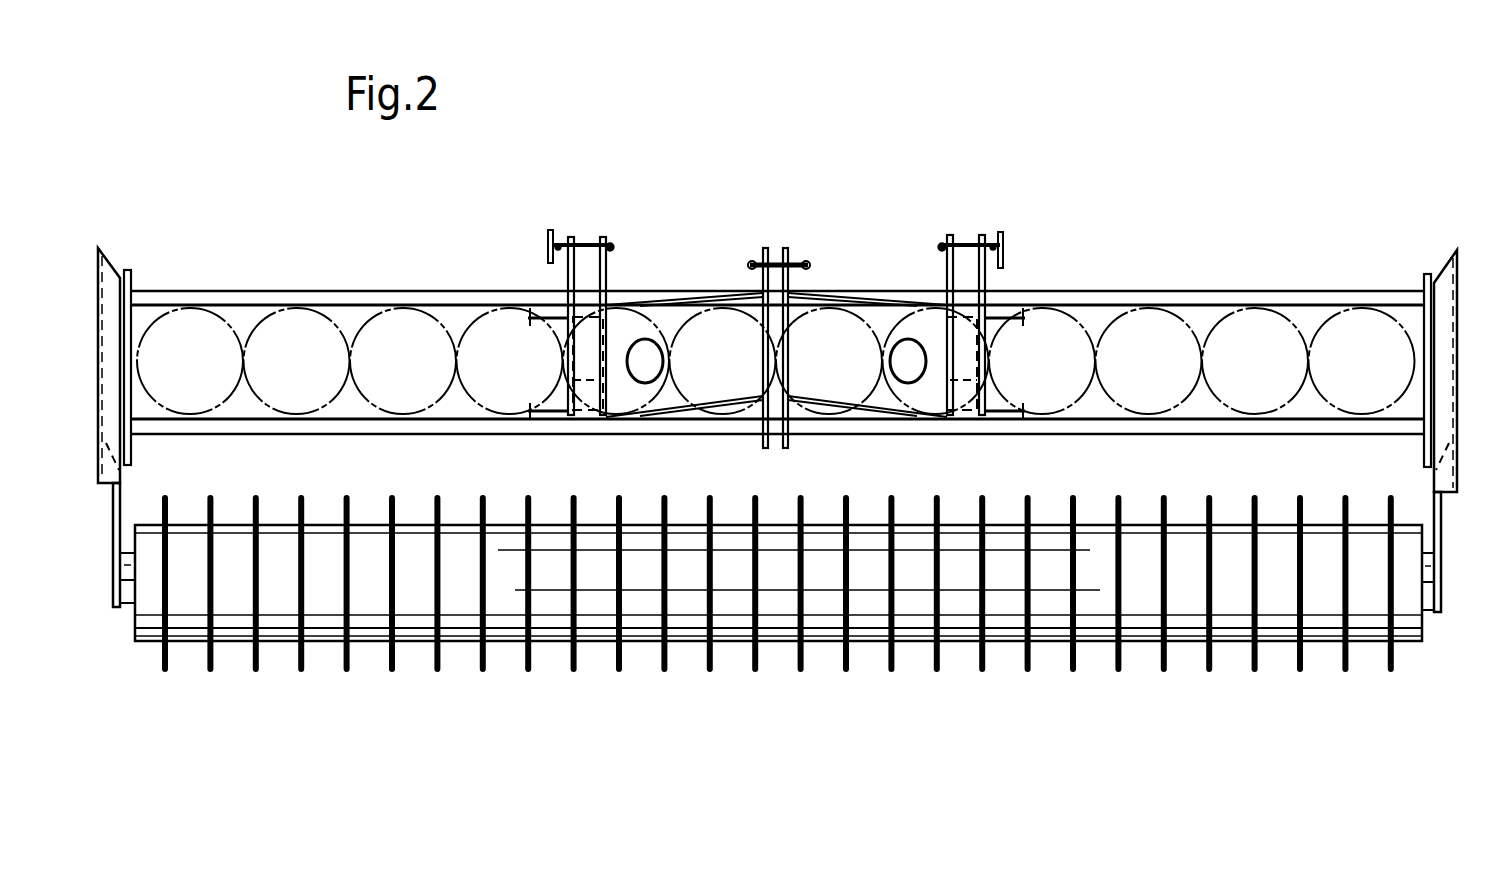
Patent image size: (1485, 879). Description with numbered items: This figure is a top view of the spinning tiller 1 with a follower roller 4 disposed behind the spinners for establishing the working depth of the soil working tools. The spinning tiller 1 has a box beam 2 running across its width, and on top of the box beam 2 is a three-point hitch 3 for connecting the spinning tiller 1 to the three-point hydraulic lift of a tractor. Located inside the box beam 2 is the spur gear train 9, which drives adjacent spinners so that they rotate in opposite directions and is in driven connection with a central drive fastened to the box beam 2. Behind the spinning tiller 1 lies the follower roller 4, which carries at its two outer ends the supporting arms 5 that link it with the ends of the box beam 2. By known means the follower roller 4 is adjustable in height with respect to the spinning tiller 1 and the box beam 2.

The spinning tiller 1 is at (1100, 305).
The box beam 2 is at (1305, 318).
The three-point hitch 3 is at (793, 305).
The follower roller 4 is at (273, 632).
The supporting arms 5 is at (112, 511).
The spur gear train 9 is at (258, 320).